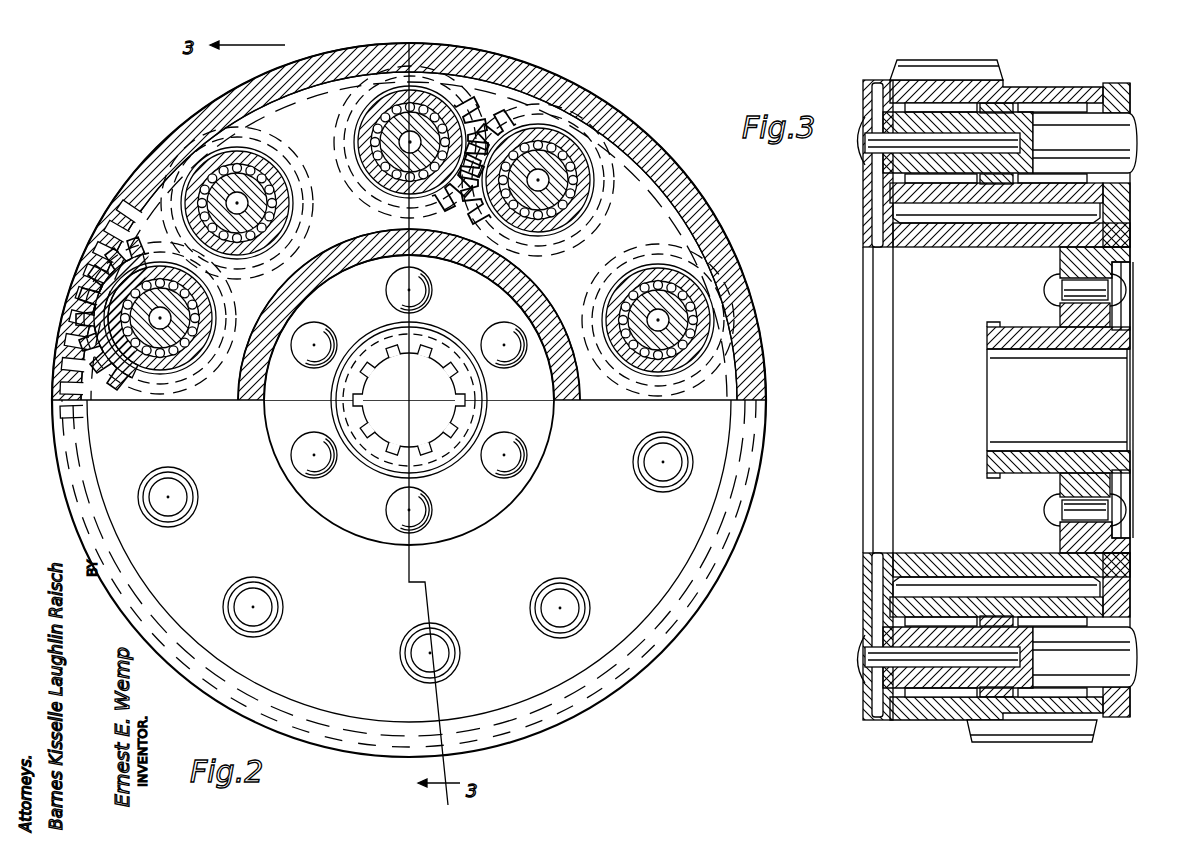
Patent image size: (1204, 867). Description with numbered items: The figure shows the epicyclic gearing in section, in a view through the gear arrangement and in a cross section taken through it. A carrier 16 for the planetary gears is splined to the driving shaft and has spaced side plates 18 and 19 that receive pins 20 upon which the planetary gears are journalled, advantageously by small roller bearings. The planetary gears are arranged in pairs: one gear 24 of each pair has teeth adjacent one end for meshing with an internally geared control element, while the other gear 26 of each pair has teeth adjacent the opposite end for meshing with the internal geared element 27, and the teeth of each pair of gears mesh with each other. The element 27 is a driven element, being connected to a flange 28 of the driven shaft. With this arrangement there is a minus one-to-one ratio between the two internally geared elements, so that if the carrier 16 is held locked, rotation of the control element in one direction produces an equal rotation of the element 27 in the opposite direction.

In FIG. 2, the carrier 16 is at (537, 294).
In FIG. 3, the carrier 16 is at (1058, 264).
In FIG. 3, the side plate 18 is at (1122, 206).
In FIG. 3, the side plate 19 is at (863, 93).
In FIG. 3, the pin 20 is at (1078, 112).
In FIG. 2, the gear 24 is at (334, 240).
In FIG. 3, the gear 24 is at (897, 82).
In FIG. 2, the gear 26 is at (185, 160).
In FIG. 3, the gear 26 is at (1050, 745).
In FIG. 2, the internal geared element 27 is at (633, 123).
In FIG. 2, the flange 28 is at (645, 213).